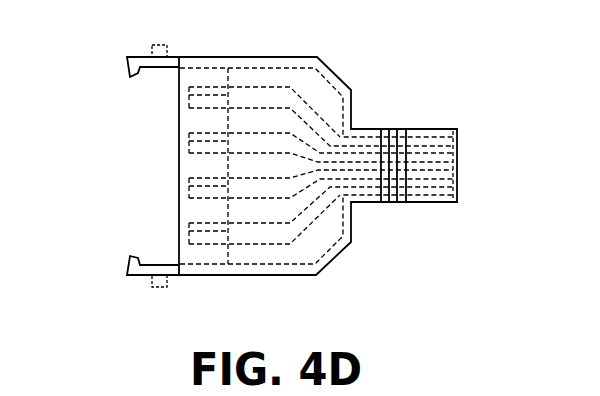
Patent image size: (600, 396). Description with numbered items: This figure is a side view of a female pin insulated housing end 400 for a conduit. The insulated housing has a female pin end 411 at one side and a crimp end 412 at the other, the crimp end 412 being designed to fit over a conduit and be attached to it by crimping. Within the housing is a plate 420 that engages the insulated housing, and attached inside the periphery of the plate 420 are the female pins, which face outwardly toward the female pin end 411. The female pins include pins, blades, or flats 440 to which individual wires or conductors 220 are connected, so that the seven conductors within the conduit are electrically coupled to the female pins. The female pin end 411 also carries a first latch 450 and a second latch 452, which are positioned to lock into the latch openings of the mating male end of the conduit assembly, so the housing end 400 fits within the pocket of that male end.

The female pin insulated housing end 400 is at (273, 169).
The female pin end 411 is at (178, 191).
The crimp end 412 is at (408, 129).
The plate 420 is at (228, 124).
The pins, blades, or flats 440 is at (265, 233).
The first latch 450 is at (145, 57).
The second latch 452 is at (147, 274).
The individual wires or conductors 220 is at (315, 219).